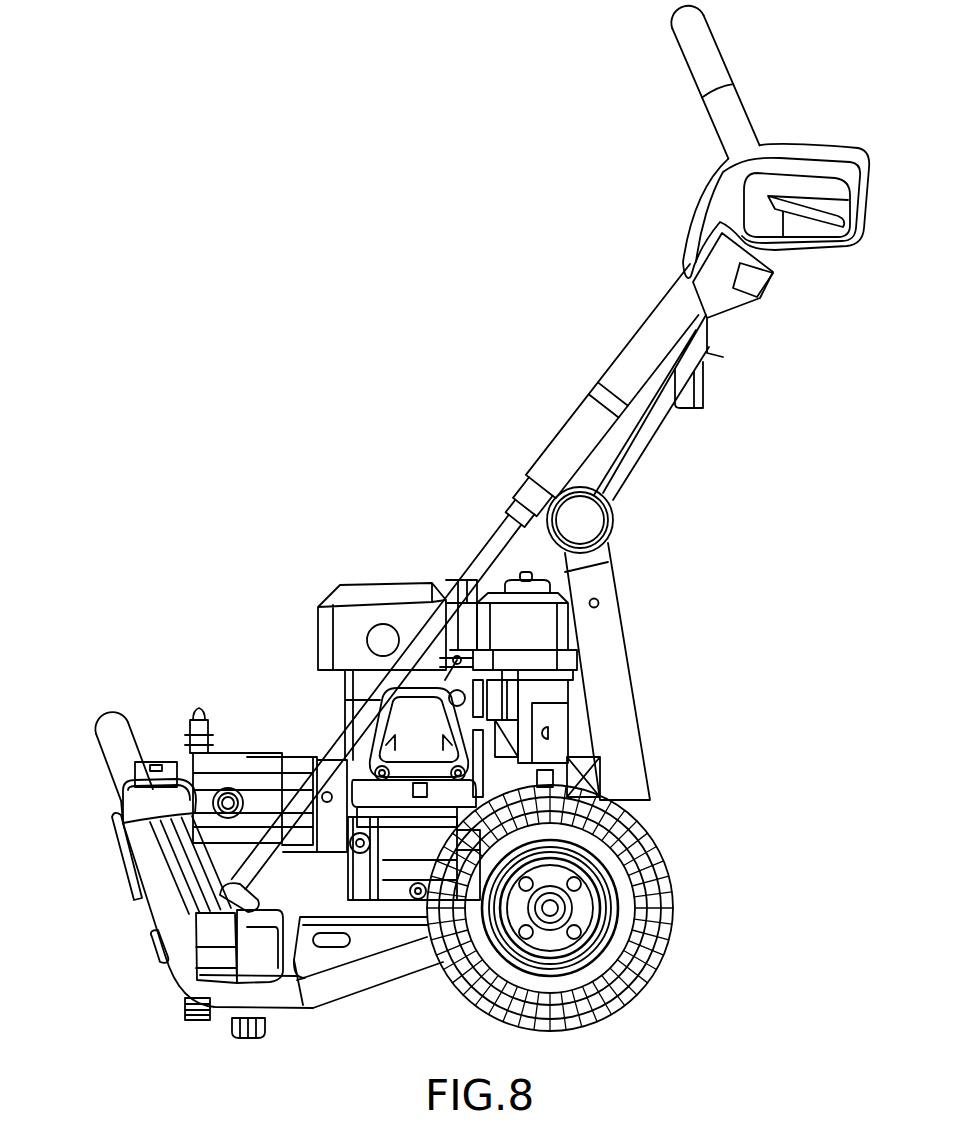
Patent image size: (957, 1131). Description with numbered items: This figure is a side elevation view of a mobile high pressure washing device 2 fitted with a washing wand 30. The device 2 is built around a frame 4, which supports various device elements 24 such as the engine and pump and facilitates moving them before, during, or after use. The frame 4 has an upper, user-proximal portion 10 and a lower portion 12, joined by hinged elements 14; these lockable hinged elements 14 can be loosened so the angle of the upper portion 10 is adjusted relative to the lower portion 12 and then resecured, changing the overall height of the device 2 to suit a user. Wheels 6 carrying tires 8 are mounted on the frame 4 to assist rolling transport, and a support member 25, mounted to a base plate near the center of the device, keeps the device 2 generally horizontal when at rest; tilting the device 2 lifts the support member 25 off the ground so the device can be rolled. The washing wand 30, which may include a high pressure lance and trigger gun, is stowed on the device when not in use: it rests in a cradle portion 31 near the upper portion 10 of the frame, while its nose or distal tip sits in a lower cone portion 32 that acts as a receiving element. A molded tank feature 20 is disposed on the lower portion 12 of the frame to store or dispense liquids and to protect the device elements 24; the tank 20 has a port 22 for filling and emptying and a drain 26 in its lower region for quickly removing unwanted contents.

The mobile high pressure washing device 2 is at (477, 368).
The frame 4 is at (623, 713).
The wheels 6 is at (585, 893).
The tires 8 is at (668, 953).
The upper portion of the frame 10 is at (712, 58).
The lower portion of the frame 12 is at (110, 735).
The hinged elements 14 is at (590, 523).
The molded tank feature 20 is at (135, 903).
The port 22 is at (155, 765).
The device elements 24 is at (322, 592).
The support member 25 is at (242, 1030).
The drain 26 is at (188, 1005).
The washing wand 30 is at (495, 528).
The cradle portion 31 is at (722, 290).
The lower cone portion 32 is at (248, 907).